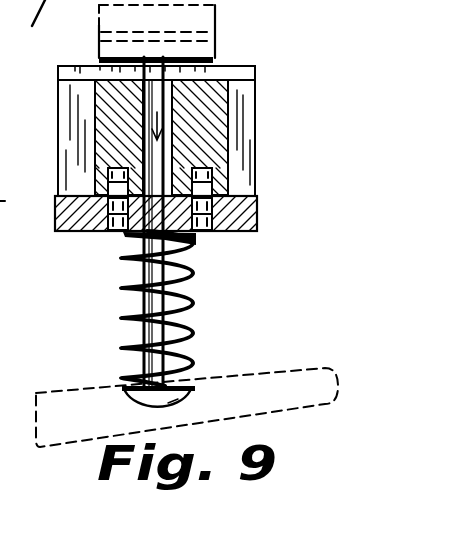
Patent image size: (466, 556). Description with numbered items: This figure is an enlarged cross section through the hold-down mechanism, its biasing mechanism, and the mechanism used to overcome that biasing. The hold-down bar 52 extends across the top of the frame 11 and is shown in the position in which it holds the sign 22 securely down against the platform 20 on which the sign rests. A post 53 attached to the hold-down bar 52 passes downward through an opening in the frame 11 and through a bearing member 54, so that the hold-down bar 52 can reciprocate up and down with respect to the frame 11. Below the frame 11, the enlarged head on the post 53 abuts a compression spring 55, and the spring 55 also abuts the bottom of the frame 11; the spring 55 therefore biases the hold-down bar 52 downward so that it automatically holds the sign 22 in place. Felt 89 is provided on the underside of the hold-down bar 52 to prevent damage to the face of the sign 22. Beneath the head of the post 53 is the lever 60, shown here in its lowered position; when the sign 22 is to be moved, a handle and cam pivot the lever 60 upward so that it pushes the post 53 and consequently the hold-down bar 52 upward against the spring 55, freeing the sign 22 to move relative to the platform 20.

The frame 11 is at (252, 216).
The platform 20 is at (252, 160).
The sign 22 is at (246, 72).
The hold-down bar 52 is at (217, 45).
The post 53 is at (176, 264).
The bearing member 54 is at (212, 120).
The compression spring 55 is at (196, 303).
The lever 60 is at (296, 368).
The felt 89 is at (100, 58).